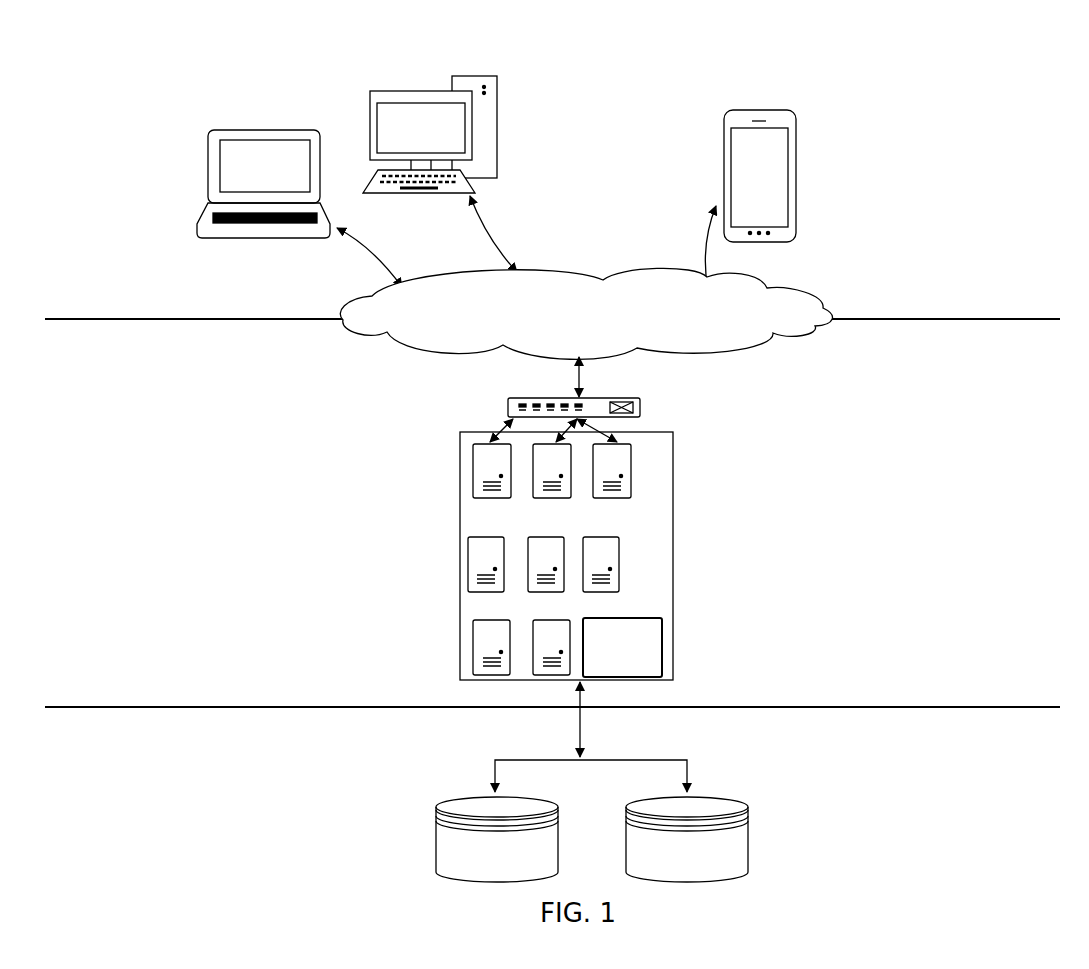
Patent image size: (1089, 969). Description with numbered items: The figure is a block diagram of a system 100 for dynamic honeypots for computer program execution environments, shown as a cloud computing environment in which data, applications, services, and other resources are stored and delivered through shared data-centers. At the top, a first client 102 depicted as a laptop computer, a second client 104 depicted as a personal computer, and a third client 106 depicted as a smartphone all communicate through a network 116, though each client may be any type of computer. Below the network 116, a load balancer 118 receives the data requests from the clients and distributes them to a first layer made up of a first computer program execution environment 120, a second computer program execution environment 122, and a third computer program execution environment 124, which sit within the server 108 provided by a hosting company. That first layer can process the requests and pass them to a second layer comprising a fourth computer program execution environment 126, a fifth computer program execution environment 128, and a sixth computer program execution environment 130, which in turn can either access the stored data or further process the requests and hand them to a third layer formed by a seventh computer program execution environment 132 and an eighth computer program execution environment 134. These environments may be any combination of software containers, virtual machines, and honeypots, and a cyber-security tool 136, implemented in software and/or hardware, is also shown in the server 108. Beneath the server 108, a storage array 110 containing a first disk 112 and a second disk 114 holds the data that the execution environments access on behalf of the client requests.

The system 100 is at (553, 98).
The first client 102 is at (268, 128).
The second client 104 is at (407, 90).
The third client 106 is at (729, 108).
The server 108 is at (460, 432).
The storage array 110 is at (776, 737).
The first disk 112 is at (452, 798).
The second disk 114 is at (634, 802).
The network 116 is at (586, 332).
The load balancer 118 is at (512, 400).
The first computer program execution environment 120 is at (492, 485).
The second computer program execution environment 122 is at (552, 485).
The third computer program execution environment 124 is at (612, 485).
The fourth computer program execution environment 126 is at (486, 578).
The fifth computer program execution environment 128 is at (546, 578).
The sixth computer program execution environment 130 is at (601, 578).
The seventh computer program execution environment 132 is at (491, 661).
The eighth computer program execution environment 134 is at (551, 661).
The cyber-security tool 136 is at (622, 647).